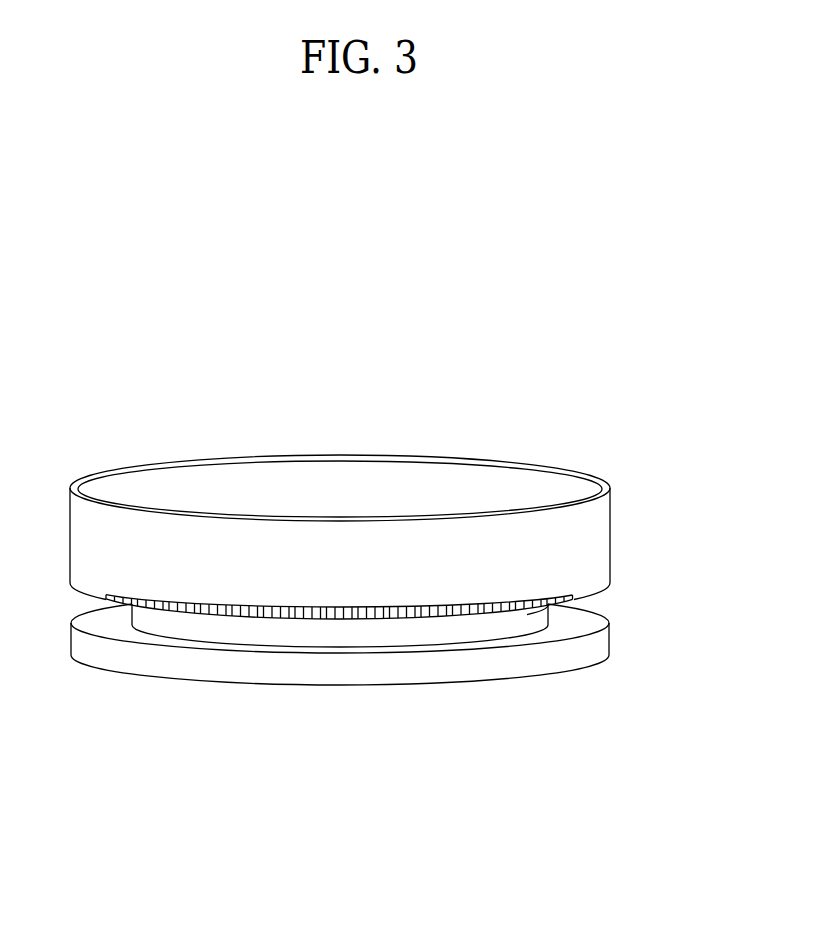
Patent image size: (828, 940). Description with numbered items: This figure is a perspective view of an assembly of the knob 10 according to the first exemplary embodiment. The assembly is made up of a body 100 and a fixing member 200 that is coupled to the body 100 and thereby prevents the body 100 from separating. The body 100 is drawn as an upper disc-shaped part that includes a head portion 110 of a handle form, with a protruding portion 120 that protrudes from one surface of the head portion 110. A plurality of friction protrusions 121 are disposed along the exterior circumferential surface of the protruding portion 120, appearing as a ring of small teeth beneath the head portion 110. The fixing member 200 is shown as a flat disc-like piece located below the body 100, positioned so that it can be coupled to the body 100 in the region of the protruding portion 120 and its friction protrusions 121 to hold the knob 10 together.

The knob 10 is at (219, 371).
The body 100 is at (371, 494).
The head portion 110 is at (612, 529).
The protruding portion 120 is at (612, 628).
The friction protrusions 121 is at (400, 613).
The fixing member 200 is at (374, 667).